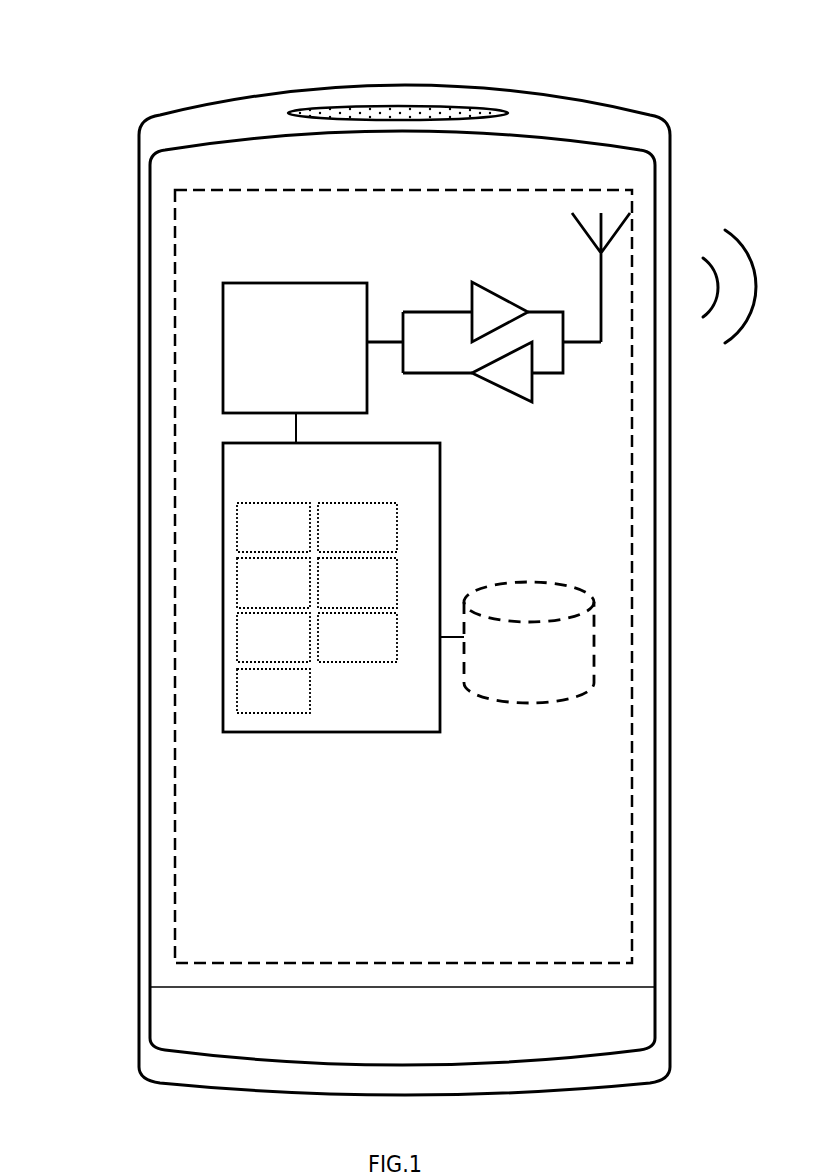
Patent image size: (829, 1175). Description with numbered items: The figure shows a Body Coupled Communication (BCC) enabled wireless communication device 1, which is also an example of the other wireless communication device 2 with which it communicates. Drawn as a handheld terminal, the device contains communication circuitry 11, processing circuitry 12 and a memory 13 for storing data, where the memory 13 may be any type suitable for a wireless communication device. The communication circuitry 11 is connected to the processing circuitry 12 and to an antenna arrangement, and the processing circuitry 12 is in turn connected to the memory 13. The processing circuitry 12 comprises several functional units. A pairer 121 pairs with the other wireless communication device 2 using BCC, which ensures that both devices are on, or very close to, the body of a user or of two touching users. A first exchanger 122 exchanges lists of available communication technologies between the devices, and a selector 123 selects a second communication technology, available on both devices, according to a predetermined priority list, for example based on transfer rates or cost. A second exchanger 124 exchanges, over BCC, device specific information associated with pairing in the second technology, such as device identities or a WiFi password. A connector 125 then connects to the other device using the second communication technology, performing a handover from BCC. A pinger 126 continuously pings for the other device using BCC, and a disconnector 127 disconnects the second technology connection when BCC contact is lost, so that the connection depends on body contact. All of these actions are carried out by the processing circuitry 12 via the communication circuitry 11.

The wireless communication device 1 is at (134, 48).
The other wireless communication device 2 is at (357, 537).
The communication circuitry 11 is at (295, 348).
The processing circuitry 12 is at (331, 587).
The memory 13 is at (529, 642).
The pairer 121 is at (273, 527).
The first exchanger 122 is at (357, 527).
The selector 123 is at (273, 583).
The second exchanger 124 is at (357, 583).
The connector 125 is at (273, 637).
The pinger 126 is at (357, 637).
The disconnector 127 is at (273, 691).